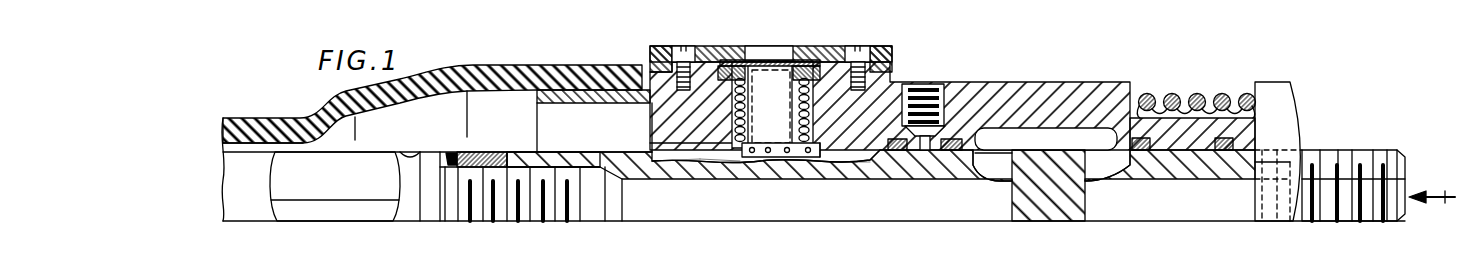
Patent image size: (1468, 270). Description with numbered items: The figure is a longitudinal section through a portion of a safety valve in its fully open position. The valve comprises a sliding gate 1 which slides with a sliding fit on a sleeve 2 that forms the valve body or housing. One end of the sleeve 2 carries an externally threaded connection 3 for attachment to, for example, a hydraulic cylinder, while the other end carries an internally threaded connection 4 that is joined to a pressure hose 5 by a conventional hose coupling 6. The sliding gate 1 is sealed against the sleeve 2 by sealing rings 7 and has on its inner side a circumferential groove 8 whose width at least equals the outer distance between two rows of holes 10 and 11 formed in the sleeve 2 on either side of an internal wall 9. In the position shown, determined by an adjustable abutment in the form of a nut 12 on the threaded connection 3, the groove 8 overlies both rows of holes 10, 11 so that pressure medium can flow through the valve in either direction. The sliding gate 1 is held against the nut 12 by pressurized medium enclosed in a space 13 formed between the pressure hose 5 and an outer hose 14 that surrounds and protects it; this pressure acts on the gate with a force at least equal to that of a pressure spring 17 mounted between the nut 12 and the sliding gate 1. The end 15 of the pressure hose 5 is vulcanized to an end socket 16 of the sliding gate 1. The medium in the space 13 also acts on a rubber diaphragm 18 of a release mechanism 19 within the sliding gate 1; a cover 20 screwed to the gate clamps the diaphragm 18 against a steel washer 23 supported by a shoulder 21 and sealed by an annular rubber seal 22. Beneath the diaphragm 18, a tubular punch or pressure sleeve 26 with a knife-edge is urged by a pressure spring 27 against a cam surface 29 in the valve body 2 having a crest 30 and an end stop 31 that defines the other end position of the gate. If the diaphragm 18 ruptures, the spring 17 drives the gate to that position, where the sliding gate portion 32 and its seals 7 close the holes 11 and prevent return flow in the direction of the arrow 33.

The sliding gate 1 is at (1033, 82).
The sleeve 2 is at (917, 180).
The externally threaded connection 3 is at (1340, 152).
The internally threaded connection 4 is at (560, 160).
The pressure hose 5 is at (239, 206).
The hose coupling 6 is at (350, 210).
The sealing rings 7 is at (950, 152).
The circumferential groove 8 is at (1003, 128).
The wall 9 is at (1047, 211).
The row of holes 10 is at (988, 174).
The row of holes 11 is at (1108, 170).
The adjustable abutment 12 is at (1283, 93).
The space 13 is at (340, 140).
The outer hose 14 is at (237, 132).
The end of pressure hose 15 is at (562, 64).
The end socket 16 is at (538, 108).
The pressure spring 17 is at (1170, 94).
The rubber diaphragm 18 is at (764, 60).
The release mechanism 19 is at (773, 130).
The cover 20 is at (810, 47).
The shoulder 21 is at (840, 52).
The annular rubber seal 22 is at (660, 119).
The steel washer 23 is at (722, 47).
The pressure sleeve 26 is at (800, 152).
The pressure spring 27 is at (763, 157).
The cam surface 29 is at (836, 170).
The crest 30 is at (722, 162).
The end stop 31 is at (690, 172).
The sliding gate portion 32 is at (1195, 150).
The arrow 33 is at (1443, 203).